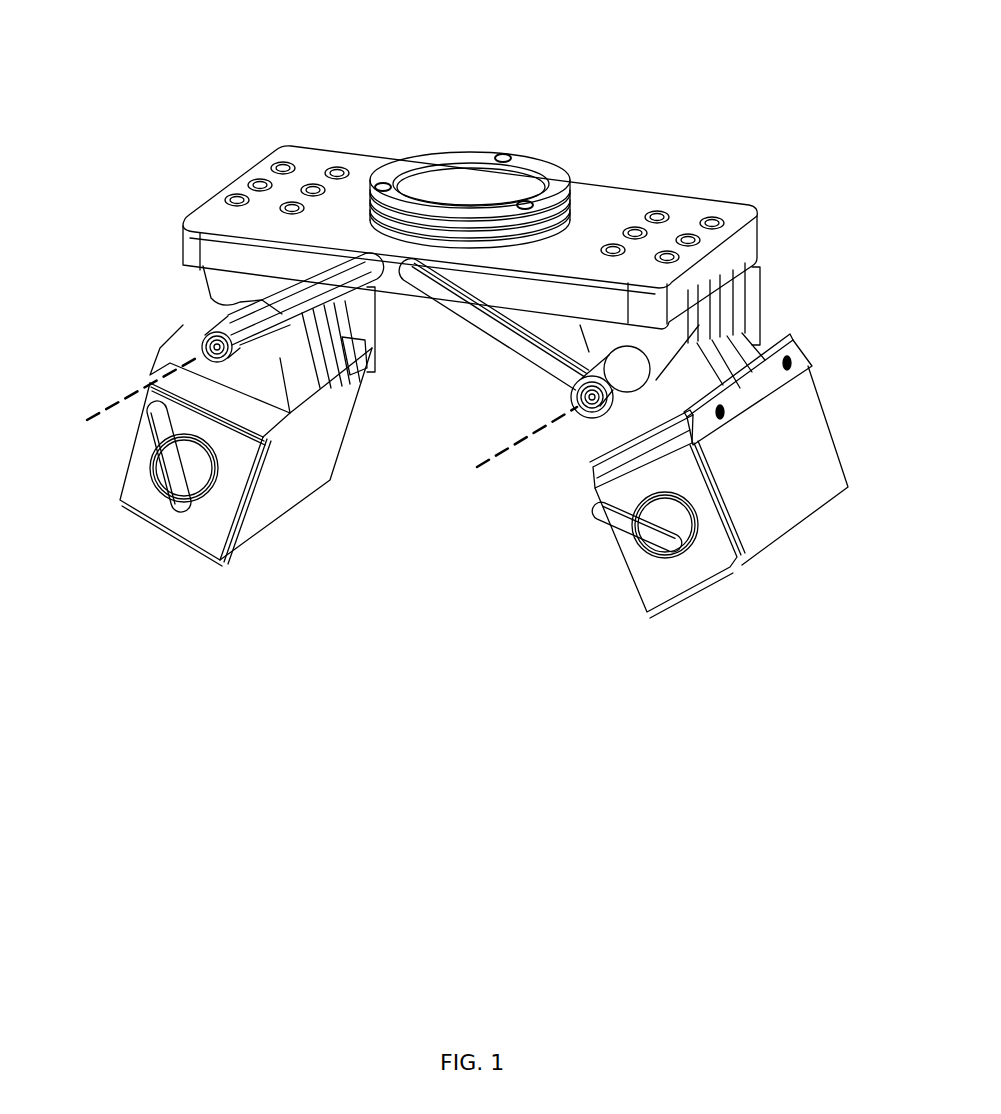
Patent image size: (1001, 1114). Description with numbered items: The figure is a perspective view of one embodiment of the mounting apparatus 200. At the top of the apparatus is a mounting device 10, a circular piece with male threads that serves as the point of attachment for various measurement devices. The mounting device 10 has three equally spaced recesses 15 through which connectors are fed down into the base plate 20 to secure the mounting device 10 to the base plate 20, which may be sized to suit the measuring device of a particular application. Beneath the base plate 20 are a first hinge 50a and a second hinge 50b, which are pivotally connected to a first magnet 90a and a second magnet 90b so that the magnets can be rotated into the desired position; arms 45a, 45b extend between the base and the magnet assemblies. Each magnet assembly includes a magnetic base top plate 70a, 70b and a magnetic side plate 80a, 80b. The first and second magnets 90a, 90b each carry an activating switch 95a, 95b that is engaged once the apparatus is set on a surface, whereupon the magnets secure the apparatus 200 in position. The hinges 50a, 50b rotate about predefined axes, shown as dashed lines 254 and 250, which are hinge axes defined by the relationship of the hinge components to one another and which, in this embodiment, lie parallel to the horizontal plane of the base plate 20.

The apparatus 200 is at (488, 122).
The mounting device 10 is at (437, 160).
The recesses 15 is at (526, 203).
The base plate 20 is at (693, 210).
The first arm 45a is at (534, 358).
The second arm 45b is at (298, 304).
The first hinge 50a is at (760, 301).
The second hinge 50b is at (376, 337).
The magnetic base top plate 70a is at (615, 465).
The magnetic base top plate 70b is at (150, 385).
The magnetic side plate 80a is at (696, 425).
The magnetic side plate 80b is at (158, 372).
The first magnet 90a is at (751, 532).
The second magnet 90b is at (142, 475).
The activating switch 95a is at (637, 532).
The activating switch 95b is at (165, 463).
The predefined axis 250 is at (112, 397).
The predefined axis 254 is at (507, 438).